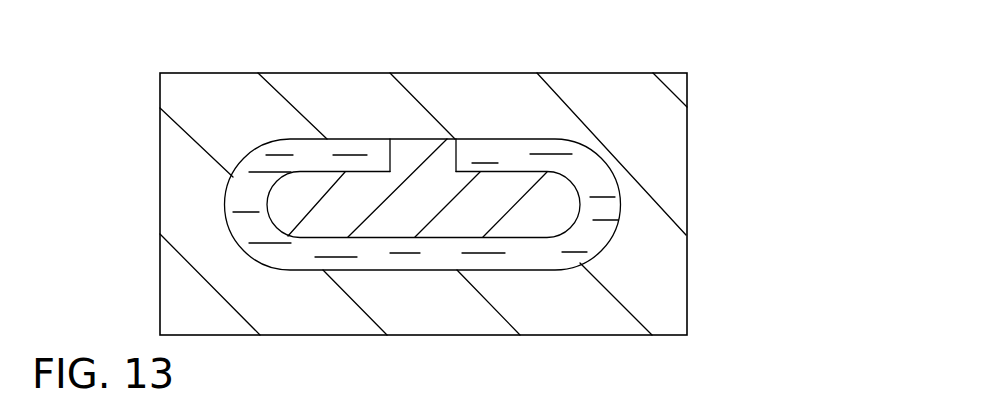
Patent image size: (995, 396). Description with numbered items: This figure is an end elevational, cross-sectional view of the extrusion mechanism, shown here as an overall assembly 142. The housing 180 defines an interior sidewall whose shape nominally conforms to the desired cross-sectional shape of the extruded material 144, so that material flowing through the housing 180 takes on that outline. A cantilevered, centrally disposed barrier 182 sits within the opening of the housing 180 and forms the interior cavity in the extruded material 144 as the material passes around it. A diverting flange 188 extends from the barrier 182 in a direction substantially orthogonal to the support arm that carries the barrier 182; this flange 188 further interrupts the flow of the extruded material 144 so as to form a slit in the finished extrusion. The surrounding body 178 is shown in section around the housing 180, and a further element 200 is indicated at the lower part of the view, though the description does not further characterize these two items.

The assembly 142 is at (728, 62).
The extruded material 144 is at (597, 177).
The body material 178 is at (177, 204).
The housing 180 is at (602, 258).
The barrier 182 is at (505, 185).
The diverting flange 188 is at (414, 150).
The connector 200 is at (525, 395).